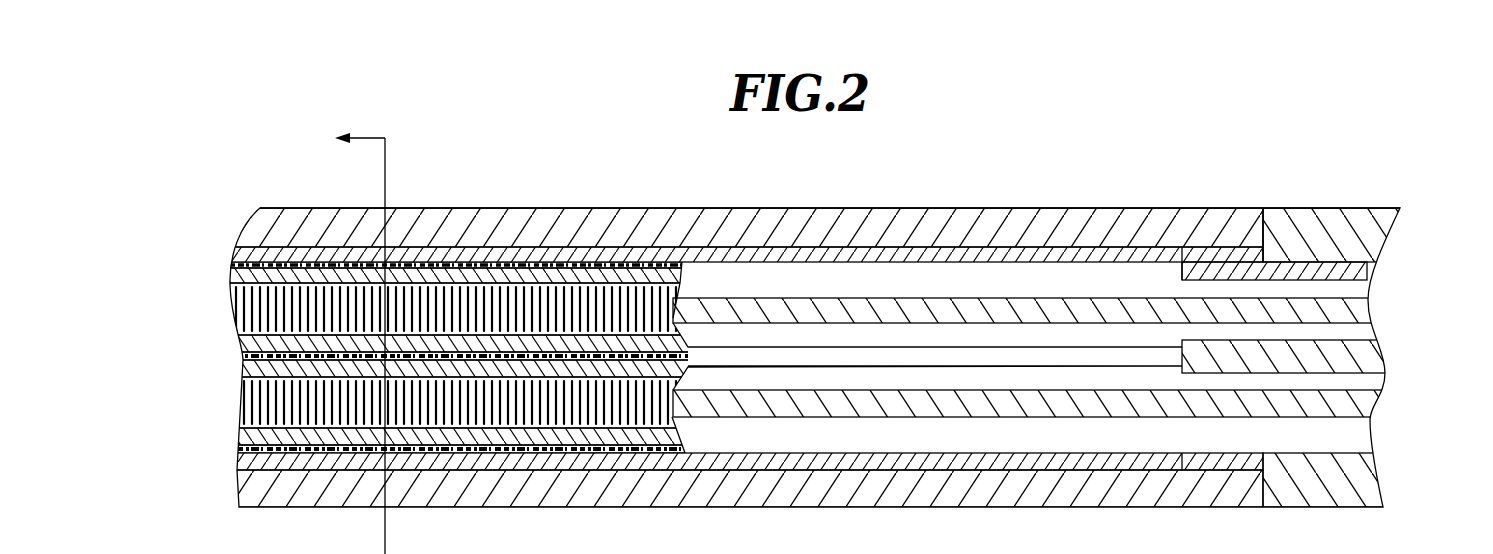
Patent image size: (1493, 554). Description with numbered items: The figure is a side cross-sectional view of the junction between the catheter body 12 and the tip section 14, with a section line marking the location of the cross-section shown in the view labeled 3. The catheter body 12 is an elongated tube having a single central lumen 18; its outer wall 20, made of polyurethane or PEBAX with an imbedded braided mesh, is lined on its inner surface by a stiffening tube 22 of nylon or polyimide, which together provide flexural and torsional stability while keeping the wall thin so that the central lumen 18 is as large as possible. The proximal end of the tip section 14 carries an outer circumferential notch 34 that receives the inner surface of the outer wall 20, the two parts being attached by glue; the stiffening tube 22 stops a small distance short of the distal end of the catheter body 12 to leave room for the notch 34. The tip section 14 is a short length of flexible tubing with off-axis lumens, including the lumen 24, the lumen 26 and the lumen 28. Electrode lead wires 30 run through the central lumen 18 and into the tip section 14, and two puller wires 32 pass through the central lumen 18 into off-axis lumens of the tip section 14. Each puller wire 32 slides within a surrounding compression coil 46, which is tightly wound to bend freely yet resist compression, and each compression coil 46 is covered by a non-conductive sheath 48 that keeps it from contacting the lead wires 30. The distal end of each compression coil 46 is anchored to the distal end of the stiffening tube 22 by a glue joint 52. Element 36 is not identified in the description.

The catheter body 12 is at (562, 158).
The tip section 14 is at (1338, 124).
The central lumen 18 is at (876, 275).
The outer wall 20 is at (300, 218).
The stiffening tube 22 is at (483, 217).
The off-axis lumen 24 is at (1292, 220).
The off-axis lumen 26 is at (1377, 338).
The off-axis lumen 28 is at (1367, 447).
The electrode lead wire 30 is at (1085, 350).
The puller wire 32 is at (977, 307).
The outer circumferential notch 34 is at (1260, 229).
The inner layer 36 is at (750, 255).
The compression coil 46 is at (247, 317).
The non-conductive sheath 48 is at (631, 273).
The glue joint 52 is at (230, 265).
The section line for FIG. 3 is at (348, 333).